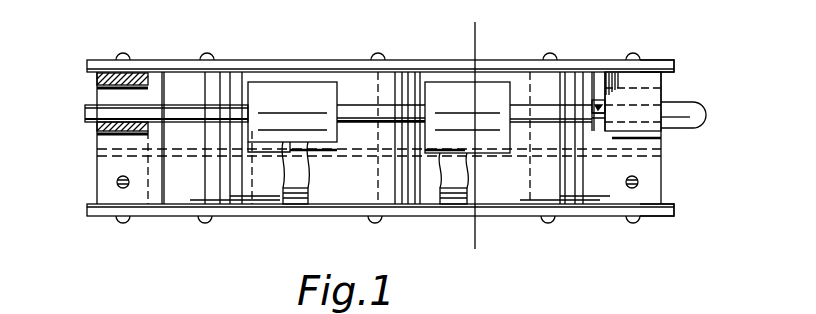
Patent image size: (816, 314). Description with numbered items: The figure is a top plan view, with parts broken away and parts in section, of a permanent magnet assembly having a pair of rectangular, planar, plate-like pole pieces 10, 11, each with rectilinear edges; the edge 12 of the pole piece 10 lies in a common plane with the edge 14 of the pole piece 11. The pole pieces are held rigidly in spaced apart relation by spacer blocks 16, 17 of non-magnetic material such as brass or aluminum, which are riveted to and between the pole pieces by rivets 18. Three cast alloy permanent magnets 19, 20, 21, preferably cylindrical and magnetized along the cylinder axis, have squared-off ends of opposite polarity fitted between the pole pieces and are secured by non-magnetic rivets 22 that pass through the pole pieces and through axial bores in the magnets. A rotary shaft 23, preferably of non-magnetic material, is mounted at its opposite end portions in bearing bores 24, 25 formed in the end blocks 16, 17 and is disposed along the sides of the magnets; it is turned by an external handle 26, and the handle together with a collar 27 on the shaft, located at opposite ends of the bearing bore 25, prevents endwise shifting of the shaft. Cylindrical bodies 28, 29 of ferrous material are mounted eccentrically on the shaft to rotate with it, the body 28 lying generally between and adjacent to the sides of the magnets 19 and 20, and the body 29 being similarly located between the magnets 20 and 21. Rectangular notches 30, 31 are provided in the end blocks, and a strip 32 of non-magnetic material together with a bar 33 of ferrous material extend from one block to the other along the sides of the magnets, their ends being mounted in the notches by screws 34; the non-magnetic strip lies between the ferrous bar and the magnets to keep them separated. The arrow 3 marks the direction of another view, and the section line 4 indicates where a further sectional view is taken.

The view arrow 3 is at (680, 155).
The section line 4- 4 is at (475, 25).
The pole piece 10 is at (158, 60).
The pole piece 11 is at (243, 217).
The rectilinear edge 12 is at (655, 60).
The rectilinear edge 14 is at (662, 217).
The spacer block 16 is at (105, 192).
The spacer block 17 is at (650, 192).
The rivets 18 is at (127, 53).
The permanent magnet 19 is at (227, 85).
The permanent magnet 20 is at (397, 75).
The permanent magnet 21 is at (570, 75).
The non-magnetic rivets 22 is at (208, 53).
The rotary shaft 23 is at (568, 113).
The bearing bore 24 is at (113, 99).
The bearing bore 25 is at (640, 107).
The external handle 26 is at (707, 112).
The collar 27 is at (588, 142).
The cylindrical body 28 is at (287, 97).
The cylindrical body 29 is at (488, 90).
The rectangular notch 30 is at (632, 140).
The rectangular notch 31 is at (97, 140).
The strip 32 is at (305, 170).
The bar 33 is at (467, 184).
The screws 34 is at (128, 188).